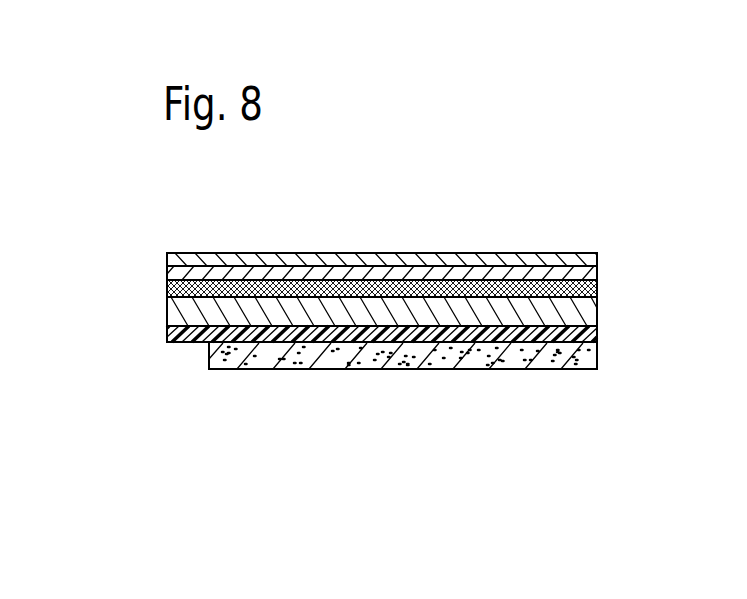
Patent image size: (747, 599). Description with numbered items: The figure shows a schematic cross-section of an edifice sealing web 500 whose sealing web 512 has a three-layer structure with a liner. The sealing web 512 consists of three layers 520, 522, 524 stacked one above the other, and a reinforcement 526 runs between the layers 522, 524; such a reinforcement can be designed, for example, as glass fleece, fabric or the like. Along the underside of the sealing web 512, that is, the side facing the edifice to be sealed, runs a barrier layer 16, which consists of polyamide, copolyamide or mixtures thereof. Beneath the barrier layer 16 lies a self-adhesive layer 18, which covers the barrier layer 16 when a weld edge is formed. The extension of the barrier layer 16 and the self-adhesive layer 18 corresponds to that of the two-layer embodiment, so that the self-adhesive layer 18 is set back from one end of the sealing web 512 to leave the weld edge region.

The edifice sealing web 500 is at (531, 181).
The sealing web 512 is at (618, 280).
The layer 520 is at (203, 253).
The layer 522 is at (297, 273).
The layer 524 is at (368, 308).
The reinforcement 526 is at (453, 288).
The barrier layer 16 is at (593, 332).
The self-adhesive layer 18 is at (593, 358).